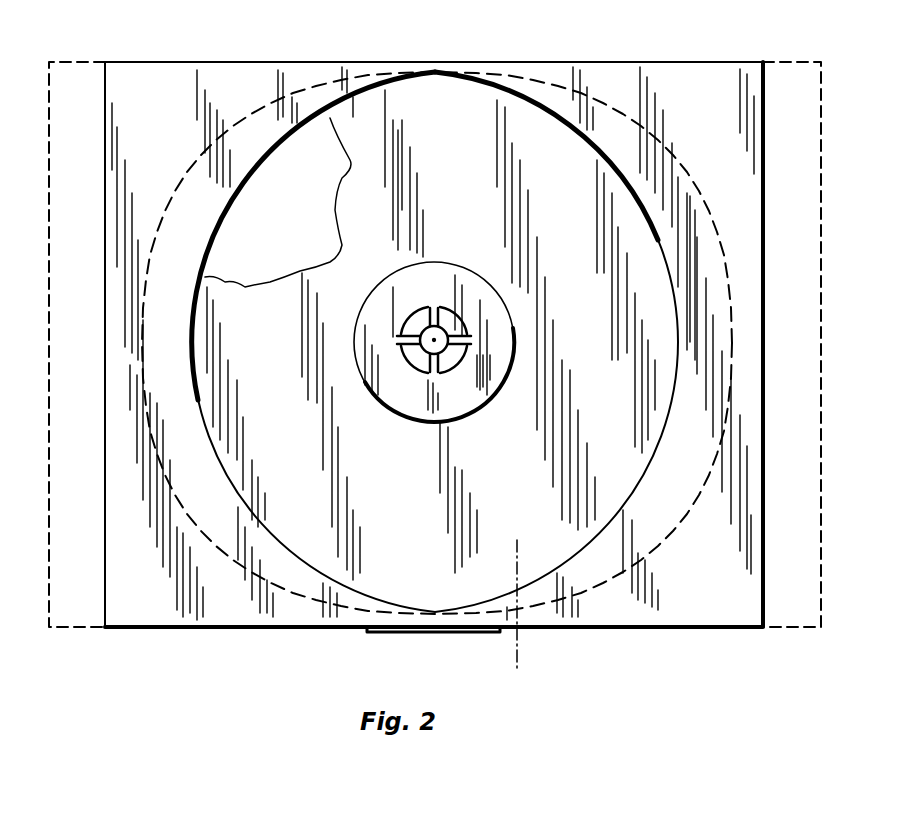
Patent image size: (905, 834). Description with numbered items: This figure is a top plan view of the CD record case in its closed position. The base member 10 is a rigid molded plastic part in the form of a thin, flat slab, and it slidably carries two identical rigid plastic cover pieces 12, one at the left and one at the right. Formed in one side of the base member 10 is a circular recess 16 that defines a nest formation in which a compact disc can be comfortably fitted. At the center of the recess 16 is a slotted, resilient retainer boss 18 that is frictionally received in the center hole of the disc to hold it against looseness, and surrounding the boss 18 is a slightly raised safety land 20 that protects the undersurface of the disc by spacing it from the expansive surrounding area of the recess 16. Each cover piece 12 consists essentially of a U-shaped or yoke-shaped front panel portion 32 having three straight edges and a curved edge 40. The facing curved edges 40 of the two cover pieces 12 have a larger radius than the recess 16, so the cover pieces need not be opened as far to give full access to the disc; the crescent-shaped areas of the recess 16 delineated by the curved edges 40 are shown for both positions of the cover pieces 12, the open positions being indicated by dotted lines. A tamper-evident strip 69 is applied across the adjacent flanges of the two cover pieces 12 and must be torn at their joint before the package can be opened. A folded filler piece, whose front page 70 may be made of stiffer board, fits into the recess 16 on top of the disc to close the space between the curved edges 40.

The base member 10 is at (358, 125).
The cover pieces 12 is at (143, 50).
The circular recess 16 is at (481, 178).
The retainer boss 18 is at (450, 324).
The safety land 20 is at (458, 397).
The front panel portion 32 is at (228, 95).
The curved edge 40 is at (197, 322).
The tamper-evident strip 69 is at (384, 633).
The front page of filler piece 70 is at (320, 228).